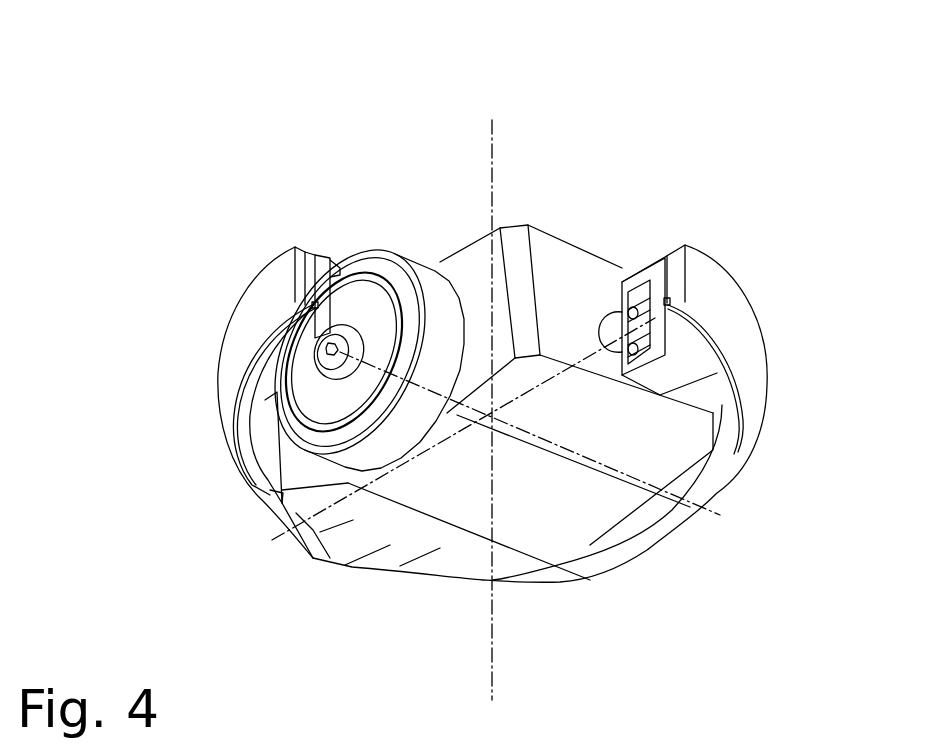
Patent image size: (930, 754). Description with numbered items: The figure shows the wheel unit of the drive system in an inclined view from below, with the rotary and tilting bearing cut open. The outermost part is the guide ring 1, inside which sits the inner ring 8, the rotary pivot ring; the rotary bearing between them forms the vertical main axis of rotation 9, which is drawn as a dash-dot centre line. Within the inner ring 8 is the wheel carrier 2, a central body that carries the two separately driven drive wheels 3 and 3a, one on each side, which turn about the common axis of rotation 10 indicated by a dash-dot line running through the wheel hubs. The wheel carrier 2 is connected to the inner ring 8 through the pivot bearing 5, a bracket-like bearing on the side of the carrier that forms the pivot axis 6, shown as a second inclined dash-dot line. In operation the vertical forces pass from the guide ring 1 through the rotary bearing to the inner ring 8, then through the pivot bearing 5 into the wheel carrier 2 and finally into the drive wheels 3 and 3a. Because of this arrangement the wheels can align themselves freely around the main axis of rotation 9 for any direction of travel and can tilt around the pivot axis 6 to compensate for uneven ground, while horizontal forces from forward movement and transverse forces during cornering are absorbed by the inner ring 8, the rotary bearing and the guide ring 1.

The guide ring 1 is at (703, 290).
The wheel carrier 2 is at (553, 260).
The drive wheel 3 is at (380, 263).
The drive wheel 3a is at (625, 555).
The pivot bearing 5 is at (636, 340).
The pivot axis 6 is at (347, 497).
The inner ring 8 is at (720, 398).
The main axis of rotation 9 is at (497, 136).
The common axis of rotation 10 is at (625, 472).